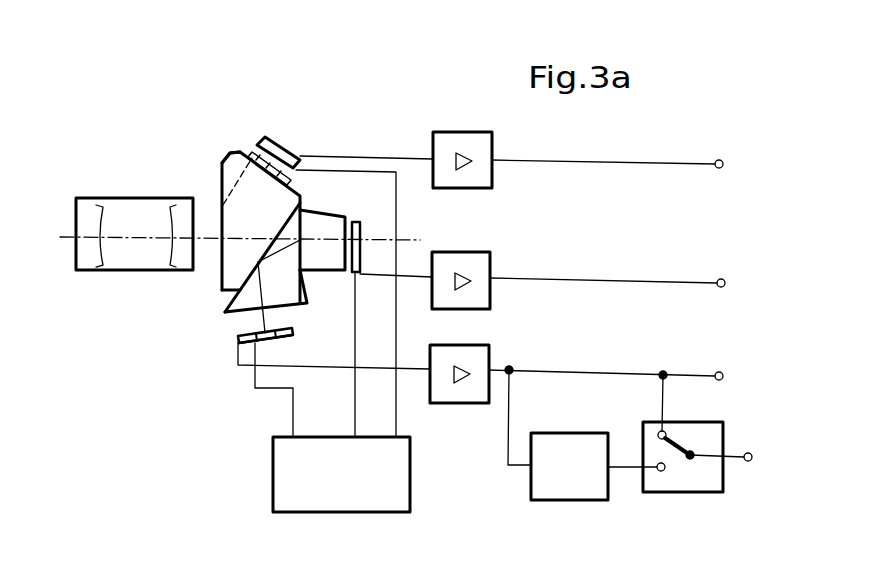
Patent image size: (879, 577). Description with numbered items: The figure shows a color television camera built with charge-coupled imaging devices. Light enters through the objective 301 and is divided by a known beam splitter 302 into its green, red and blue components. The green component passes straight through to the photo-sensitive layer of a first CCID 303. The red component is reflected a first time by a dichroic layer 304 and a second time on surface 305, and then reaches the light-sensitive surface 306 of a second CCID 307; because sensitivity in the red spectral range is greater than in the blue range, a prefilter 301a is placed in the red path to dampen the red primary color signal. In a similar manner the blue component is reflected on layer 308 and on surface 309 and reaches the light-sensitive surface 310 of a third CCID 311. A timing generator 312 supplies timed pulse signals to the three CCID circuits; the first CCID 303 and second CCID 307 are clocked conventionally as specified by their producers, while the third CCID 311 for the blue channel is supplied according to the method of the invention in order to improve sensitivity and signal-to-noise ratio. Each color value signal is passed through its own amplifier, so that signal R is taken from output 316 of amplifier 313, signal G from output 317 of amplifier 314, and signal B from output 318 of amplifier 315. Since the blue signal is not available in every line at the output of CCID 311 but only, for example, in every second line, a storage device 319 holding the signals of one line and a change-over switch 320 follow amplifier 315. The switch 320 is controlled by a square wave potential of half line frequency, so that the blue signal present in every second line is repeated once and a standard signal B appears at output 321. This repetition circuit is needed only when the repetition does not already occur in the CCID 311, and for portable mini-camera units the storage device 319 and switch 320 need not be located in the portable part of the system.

The objective 301 is at (137, 209).
The prefilter 301a is at (232, 151).
The beam splitter 302 is at (310, 209).
The first CCID 303 is at (364, 252).
The dichroic layer 304 is at (248, 282).
The surface 305 is at (271, 238).
The light-sensitive surface 306 is at (257, 158).
The second CCID 307 is at (268, 143).
The layer 308 is at (300, 264).
The surface 309 is at (257, 275).
The light-sensitive surface 310 is at (278, 332).
The third CCID 311 is at (270, 342).
The timing generator 312 is at (356, 503).
The amplifier 313 is at (486, 178).
The amplifier 314 is at (484, 294).
The amplifier 315 is at (462, 398).
The output 316 is at (614, 165).
The output 317 is at (615, 284).
The output 318 is at (613, 375).
The storage device 319 is at (571, 491).
The change-over switch 320 is at (691, 489).
The output 321 is at (721, 442).